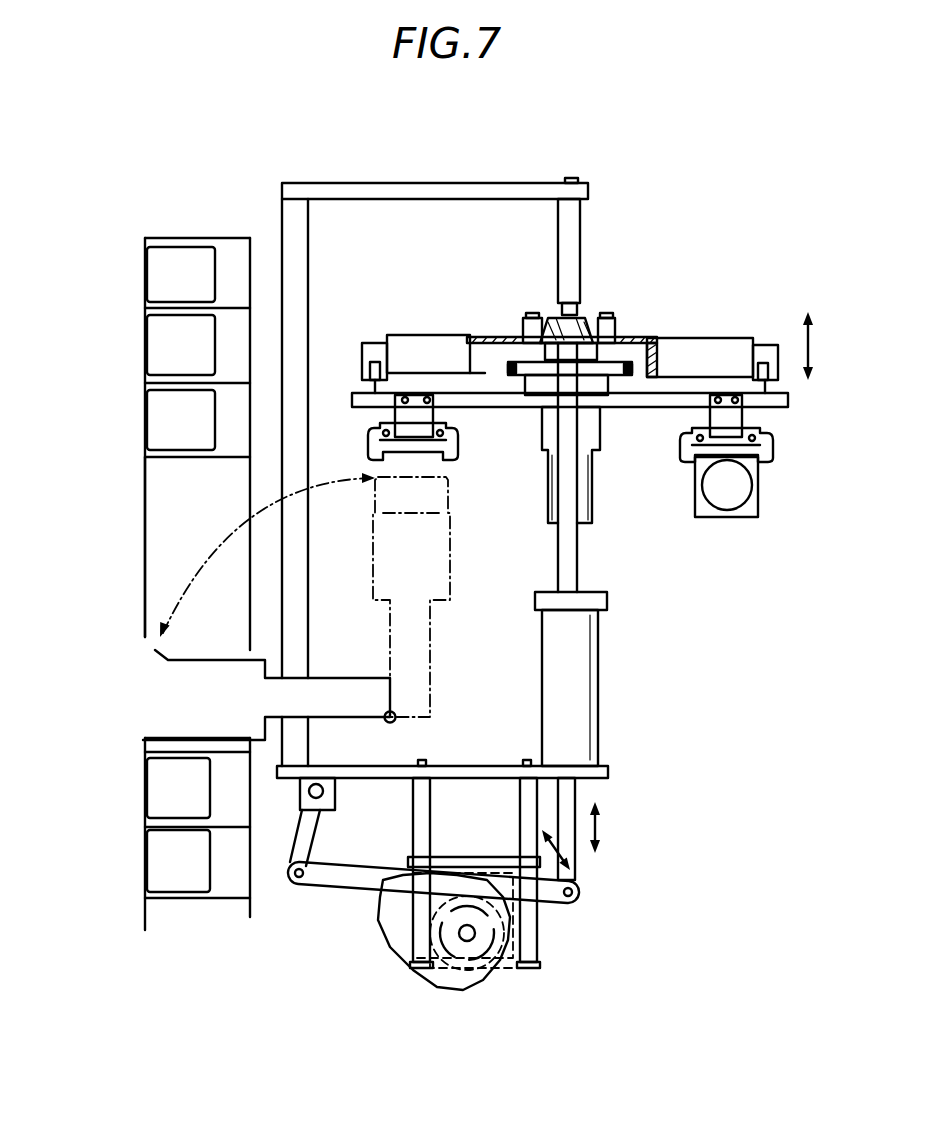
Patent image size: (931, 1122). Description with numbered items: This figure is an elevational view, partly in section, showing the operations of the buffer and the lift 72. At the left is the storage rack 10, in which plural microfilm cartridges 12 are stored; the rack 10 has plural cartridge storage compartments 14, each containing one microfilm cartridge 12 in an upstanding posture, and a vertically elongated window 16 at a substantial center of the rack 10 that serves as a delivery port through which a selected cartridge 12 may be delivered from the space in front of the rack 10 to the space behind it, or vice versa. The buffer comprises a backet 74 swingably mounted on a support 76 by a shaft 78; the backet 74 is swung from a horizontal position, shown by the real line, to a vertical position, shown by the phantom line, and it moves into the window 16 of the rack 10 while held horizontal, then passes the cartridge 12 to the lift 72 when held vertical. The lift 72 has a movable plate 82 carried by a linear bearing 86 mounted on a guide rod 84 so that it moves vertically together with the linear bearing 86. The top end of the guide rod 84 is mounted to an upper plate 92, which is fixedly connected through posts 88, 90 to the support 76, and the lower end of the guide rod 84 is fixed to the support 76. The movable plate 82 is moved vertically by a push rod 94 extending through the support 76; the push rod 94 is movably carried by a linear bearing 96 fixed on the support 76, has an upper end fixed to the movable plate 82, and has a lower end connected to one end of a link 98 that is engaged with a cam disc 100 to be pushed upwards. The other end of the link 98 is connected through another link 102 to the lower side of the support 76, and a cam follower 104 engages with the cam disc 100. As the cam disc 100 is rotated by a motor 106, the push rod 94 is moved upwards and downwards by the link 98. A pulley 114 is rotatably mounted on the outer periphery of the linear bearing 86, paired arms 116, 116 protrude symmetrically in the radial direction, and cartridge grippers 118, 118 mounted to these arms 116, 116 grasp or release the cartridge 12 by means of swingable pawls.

The storage rack 10 is at (160, 237).
The microfilm cartridge 12 is at (165, 343).
The cartridge storage compartment 14 is at (180, 455).
The window 16 is at (172, 503).
The lift 72 is at (587, 319).
The backet 74 is at (153, 653).
The support 76 is at (608, 772).
The shaft 78 is at (392, 720).
The movable plate 82 is at (700, 337).
The guide rod 84 is at (582, 243).
The linear bearing 86 is at (590, 497).
The post 88 is at (227, 457).
The frame upright 90 is at (280, 220).
The upper plate 92 is at (445, 183).
The push rod 94 is at (578, 555).
The linear bearing 96 is at (600, 655).
The link 98 is at (342, 890).
The cam disc 100 is at (385, 943).
The link 102 is at (292, 847).
The cam follower 104 is at (483, 873).
The motor 106 is at (543, 927).
The pulley 114 is at (625, 340).
The arm 116 is at (356, 398).
The cartridge gripper 118 is at (368, 442).